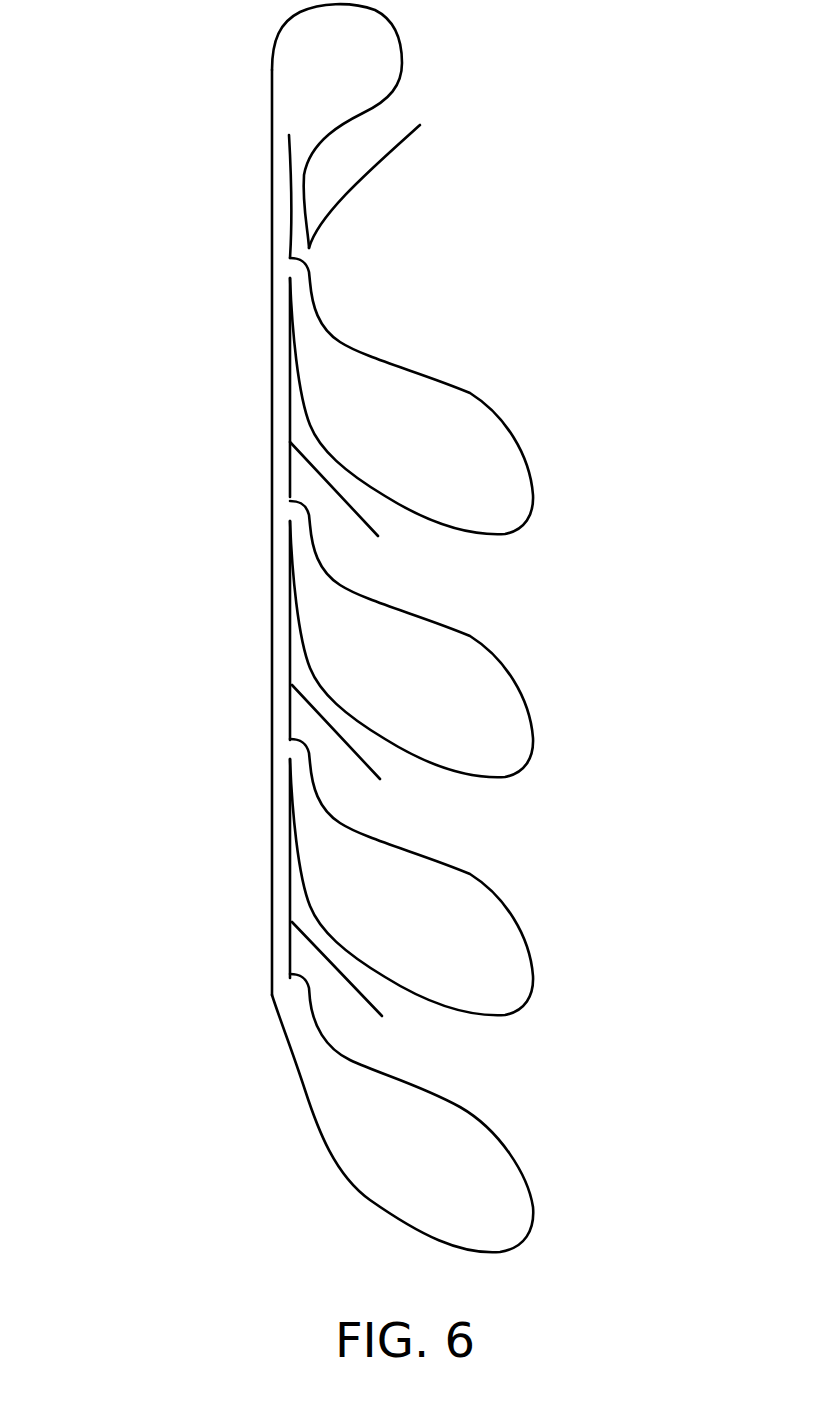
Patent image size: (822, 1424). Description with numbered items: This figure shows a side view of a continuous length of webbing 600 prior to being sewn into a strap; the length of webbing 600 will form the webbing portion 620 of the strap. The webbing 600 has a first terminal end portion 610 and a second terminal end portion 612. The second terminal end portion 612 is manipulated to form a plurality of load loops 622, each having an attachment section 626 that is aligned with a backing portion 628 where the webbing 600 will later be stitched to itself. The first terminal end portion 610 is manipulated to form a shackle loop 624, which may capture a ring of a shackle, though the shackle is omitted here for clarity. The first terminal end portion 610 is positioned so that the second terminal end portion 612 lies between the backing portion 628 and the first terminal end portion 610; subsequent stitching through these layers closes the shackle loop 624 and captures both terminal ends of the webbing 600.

The webbing 600 is at (268, 370).
The first terminal end portion 610 is at (420, 125).
The second terminal end portion 612 is at (289, 180).
The webbing portion 620 is at (582, 235).
The load loops 622 is at (503, 425).
The shackle loop 624 is at (281, 44).
The attachment sections 626 is at (378, 536).
The backing portion 628 is at (268, 516).